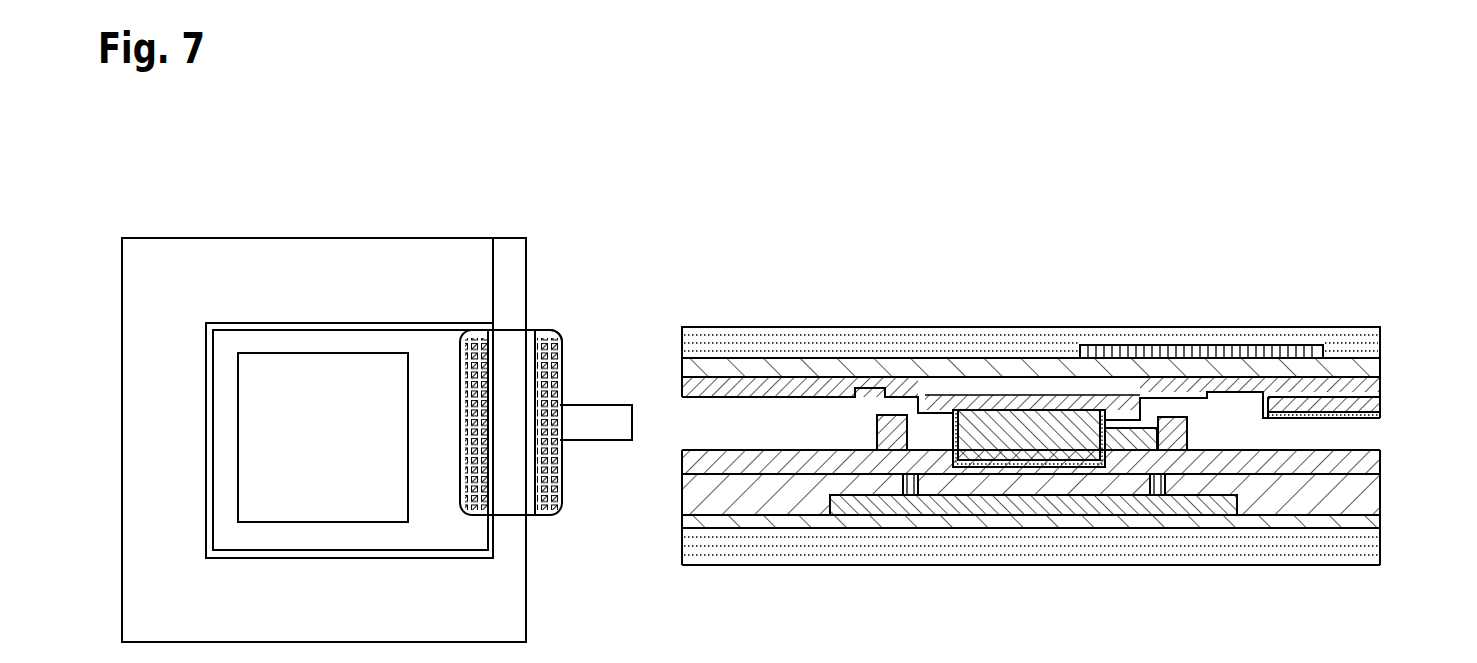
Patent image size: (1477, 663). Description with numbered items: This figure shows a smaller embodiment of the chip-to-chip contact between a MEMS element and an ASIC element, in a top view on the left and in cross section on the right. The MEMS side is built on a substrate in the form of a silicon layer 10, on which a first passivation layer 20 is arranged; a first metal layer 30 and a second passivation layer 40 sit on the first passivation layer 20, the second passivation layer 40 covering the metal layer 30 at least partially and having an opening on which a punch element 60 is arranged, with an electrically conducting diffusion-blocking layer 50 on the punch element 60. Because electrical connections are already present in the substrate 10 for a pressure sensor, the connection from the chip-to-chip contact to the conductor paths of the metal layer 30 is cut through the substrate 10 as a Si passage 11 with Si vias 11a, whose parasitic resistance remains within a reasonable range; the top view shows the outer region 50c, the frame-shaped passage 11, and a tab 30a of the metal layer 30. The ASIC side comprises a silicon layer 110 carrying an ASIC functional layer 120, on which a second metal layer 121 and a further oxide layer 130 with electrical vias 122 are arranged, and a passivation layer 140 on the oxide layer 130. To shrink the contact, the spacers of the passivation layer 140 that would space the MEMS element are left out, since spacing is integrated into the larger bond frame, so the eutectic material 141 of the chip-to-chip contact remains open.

The substrate 50c is at (183, 277).
The first metal layer 30 is at (265, 343).
The punch element 60 is at (355, 388).
The Si passage 11 is at (535, 333).
The Si vias 11a is at (575, 348).
The terminal tab of electrode wiring 30a is at (598, 430).
The silicon layer 10 is at (1382, 336).
The first passivation layer 20 is at (1382, 364).
The second passivation layer 40 is at (1382, 406).
The diffusion-blocking layer 50 is at (1382, 419).
The eutectic material 141 is at (1130, 412).
The passivation layer 140 is at (1382, 456).
The oxide layer 130 is at (1382, 490).
The ASIC functional layer 120 is at (1382, 522).
The silicon layer 110 is at (1382, 558).
The second metal layer 121 is at (1032, 505).
The electrical vias 122 is at (918, 486).